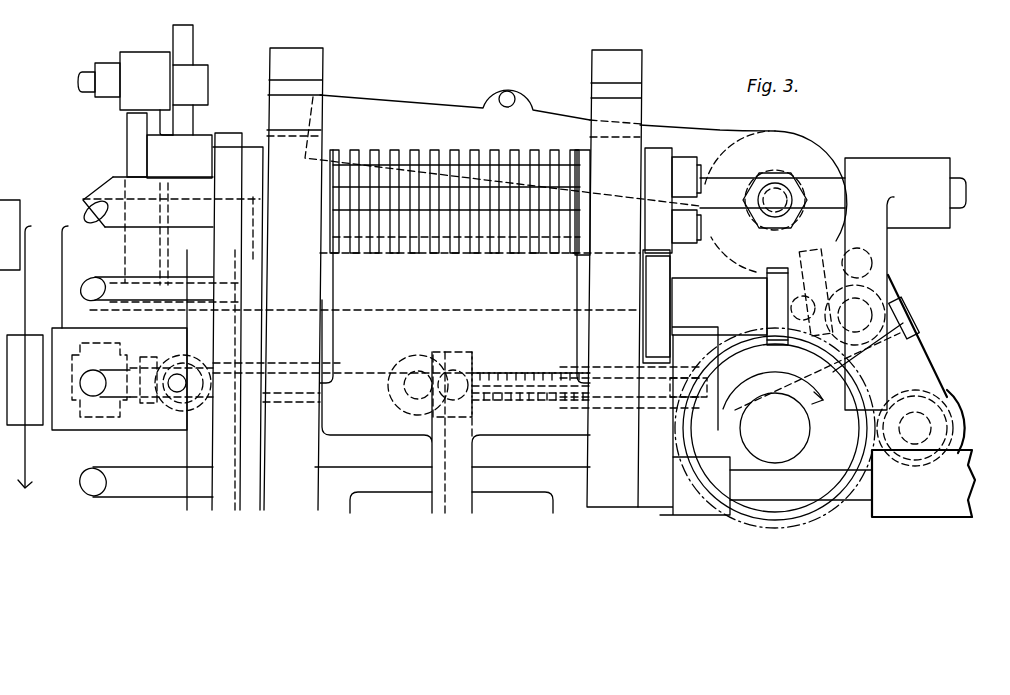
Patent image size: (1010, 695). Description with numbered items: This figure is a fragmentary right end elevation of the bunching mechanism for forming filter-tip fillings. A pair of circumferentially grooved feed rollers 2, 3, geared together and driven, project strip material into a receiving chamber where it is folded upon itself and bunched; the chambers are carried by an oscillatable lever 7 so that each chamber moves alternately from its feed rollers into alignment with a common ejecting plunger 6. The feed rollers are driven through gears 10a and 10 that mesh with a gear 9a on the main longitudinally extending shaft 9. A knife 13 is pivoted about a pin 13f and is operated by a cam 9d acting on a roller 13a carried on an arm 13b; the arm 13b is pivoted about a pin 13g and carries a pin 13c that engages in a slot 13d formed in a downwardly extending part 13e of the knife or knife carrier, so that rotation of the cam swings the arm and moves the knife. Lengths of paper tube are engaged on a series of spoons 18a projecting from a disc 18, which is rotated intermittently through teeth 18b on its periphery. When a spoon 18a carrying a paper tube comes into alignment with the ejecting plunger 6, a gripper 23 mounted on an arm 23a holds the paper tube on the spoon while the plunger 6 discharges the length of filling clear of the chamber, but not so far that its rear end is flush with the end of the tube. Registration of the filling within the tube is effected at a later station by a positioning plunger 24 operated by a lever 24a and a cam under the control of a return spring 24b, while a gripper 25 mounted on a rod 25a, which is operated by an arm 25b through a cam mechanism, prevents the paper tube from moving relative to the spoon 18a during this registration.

The feed roller 2 is at (480, 163).
The feed roller 3 is at (473, 255).
The ejecting plunger 6 is at (823, 194).
The oscillatable lever 7 is at (366, 279).
The main longitudinally extending shaft 9 is at (775, 428).
The gear 9a is at (882, 326).
The cam 9d is at (687, 468).
The gear 10 is at (719, 357).
The gear 10a is at (657, 289).
The knife 13 is at (423, 118).
The roller 13a is at (930, 397).
The arm 13b is at (892, 200).
The pin 13c is at (882, 300).
The slot 13d is at (888, 277).
The downwardly extending part 13e is at (858, 210).
The pin 13f is at (774, 190).
The pin 13g is at (827, 262).
The disc 18 is at (232, 160).
The spoon 18a is at (115, 178).
The teeth 18b is at (220, 136).
The gripper 23 is at (183, 172).
The arm 23a is at (148, 128).
The positioning plunger 24 is at (365, 375).
The lever 24a is at (407, 452).
The return spring 24b is at (537, 373).
The gripper 25 is at (200, 400).
The rod 25a is at (167, 398).
The arm 25b is at (90, 452).